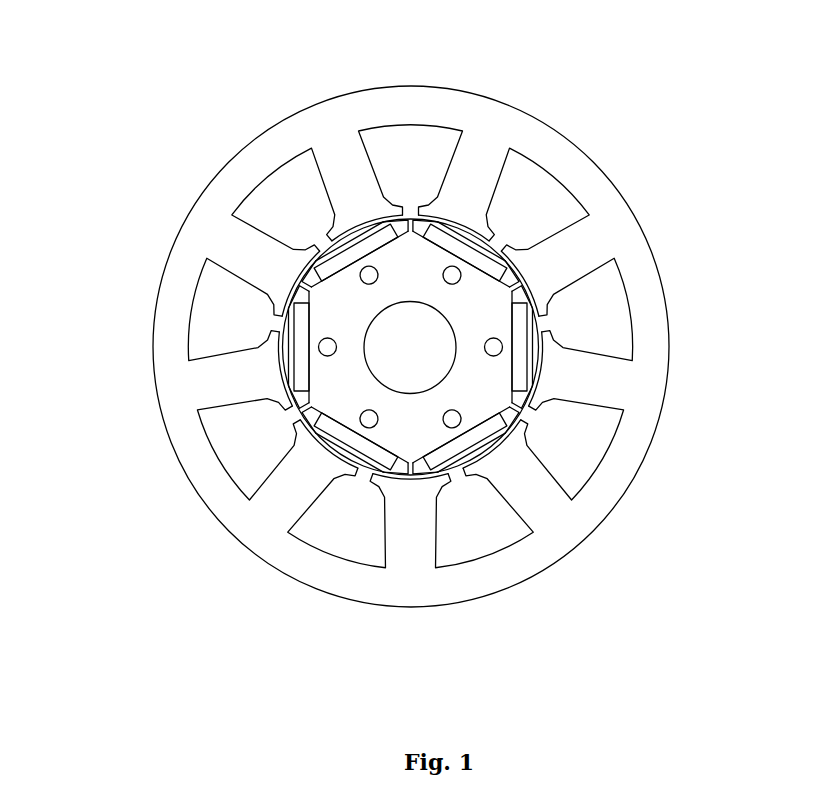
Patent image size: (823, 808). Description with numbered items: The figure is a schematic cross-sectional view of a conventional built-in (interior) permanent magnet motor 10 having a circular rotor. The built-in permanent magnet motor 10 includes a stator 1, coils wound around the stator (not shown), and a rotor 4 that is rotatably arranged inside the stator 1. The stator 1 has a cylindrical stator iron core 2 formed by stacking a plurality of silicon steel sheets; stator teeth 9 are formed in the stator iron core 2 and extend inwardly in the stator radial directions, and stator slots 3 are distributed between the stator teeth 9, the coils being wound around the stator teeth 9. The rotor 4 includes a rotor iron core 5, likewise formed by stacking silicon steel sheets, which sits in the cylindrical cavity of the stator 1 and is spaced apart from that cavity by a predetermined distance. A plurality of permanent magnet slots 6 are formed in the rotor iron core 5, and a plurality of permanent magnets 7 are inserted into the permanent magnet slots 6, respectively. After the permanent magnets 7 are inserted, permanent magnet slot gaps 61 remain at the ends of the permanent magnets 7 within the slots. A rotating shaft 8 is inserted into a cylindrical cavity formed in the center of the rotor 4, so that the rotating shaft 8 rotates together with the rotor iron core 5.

The built-in permanent magnet motor 10 is at (458, 53).
The stator 1 is at (710, 97).
The stator iron core 2 is at (500, 122).
The stator slots 3 is at (538, 231).
The stator teeth 9 is at (472, 184).
The rotor 4 is at (70, 282).
The rotor iron core 5 is at (343, 300).
The permanent magnet slots 6 is at (298, 328).
The permanent magnets 7 is at (307, 372).
The permanent magnet slot gaps 61 is at (295, 403).
The rotating shaft 8 is at (415, 348).